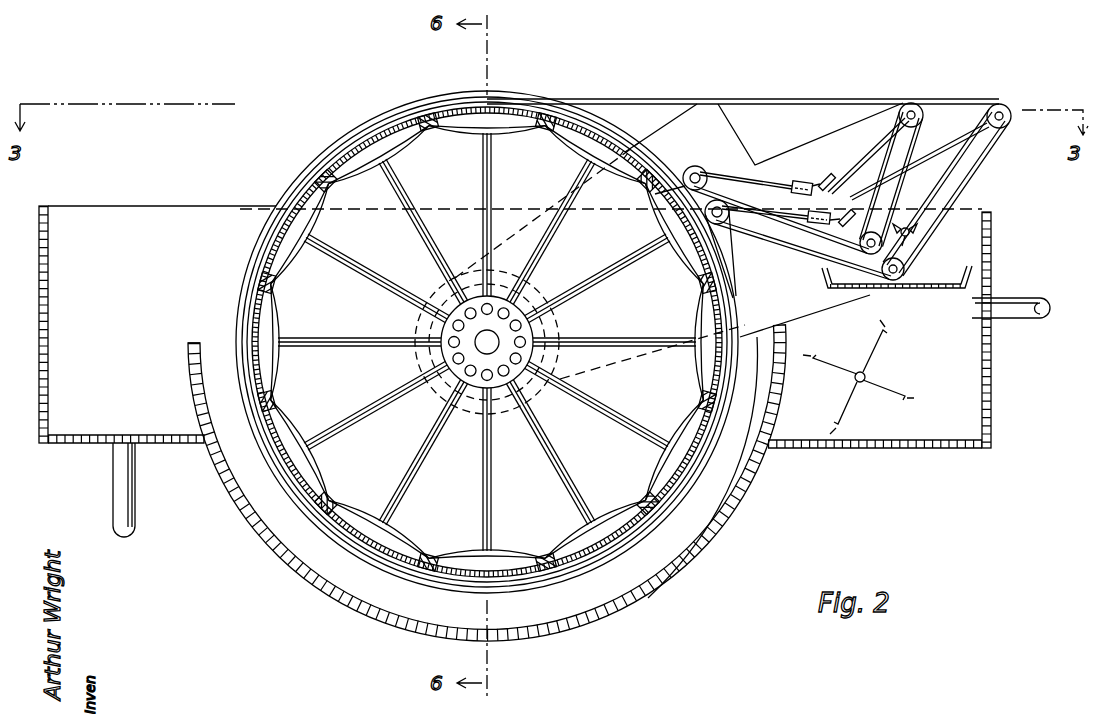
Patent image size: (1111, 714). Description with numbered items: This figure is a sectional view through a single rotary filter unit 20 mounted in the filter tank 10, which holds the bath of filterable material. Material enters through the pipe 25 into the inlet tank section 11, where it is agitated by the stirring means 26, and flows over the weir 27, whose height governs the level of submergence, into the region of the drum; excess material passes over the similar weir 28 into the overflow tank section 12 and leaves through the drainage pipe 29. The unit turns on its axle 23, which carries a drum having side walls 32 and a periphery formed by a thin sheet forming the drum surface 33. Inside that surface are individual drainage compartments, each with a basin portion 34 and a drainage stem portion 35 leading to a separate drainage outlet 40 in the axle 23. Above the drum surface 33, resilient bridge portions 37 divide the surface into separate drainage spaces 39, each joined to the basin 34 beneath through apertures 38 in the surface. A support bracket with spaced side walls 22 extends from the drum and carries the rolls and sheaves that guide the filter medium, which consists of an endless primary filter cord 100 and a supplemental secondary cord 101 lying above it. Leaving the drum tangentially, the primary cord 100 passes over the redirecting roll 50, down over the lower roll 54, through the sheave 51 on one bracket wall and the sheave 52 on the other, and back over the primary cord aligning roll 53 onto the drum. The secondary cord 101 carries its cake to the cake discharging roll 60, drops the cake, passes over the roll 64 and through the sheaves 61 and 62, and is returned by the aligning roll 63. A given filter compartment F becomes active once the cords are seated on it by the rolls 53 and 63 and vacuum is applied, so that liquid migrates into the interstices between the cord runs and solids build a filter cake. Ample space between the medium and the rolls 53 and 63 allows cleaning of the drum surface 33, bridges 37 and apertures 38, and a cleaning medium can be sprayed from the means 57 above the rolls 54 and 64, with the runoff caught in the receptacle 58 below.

The filter tank 10 is at (529, 472).
The inlet tank section 11 is at (893, 437).
The overflow tank section 12 is at (90, 430).
The rotary filter unit 20 is at (485, 323).
The support bracket side walls 22 is at (712, 104).
The axle 23 is at (478, 342).
The pipe 25 is at (1034, 300).
The stirring means 26 is at (880, 383).
The weir 27 is at (788, 338).
The weir 28 is at (190, 343).
The drainage pipe 29 is at (134, 508).
The side walls 32 is at (470, 92).
The drum surface 33 is at (690, 216).
The basin portion 34 is at (510, 130).
The drainage stem portion 35 is at (492, 202).
The bridge portions 37 is at (425, 110).
The apertures 38 is at (500, 100).
The space 39 is at (550, 110).
The drainage outlet 40 is at (526, 342).
The redirecting roll 50 is at (916, 103).
The sheave 51 is at (830, 174).
The sheave 52 is at (805, 182).
The primary cord aligning roll 53 is at (697, 166).
The lower roll 54 is at (862, 238).
The cleaning spray means 57 is at (908, 228).
The receptacle 58 is at (920, 292).
The cake discharging roll 60 is at (1002, 104).
The sheave 61 is at (850, 208).
The sheave 62 is at (818, 213).
The secondary cord aligning roll 63 is at (724, 223).
The roll 64 is at (905, 270).
The primary filter cord 100 is at (745, 172).
The secondary cord 101 is at (758, 262).
The filter compartment F is at (705, 356).